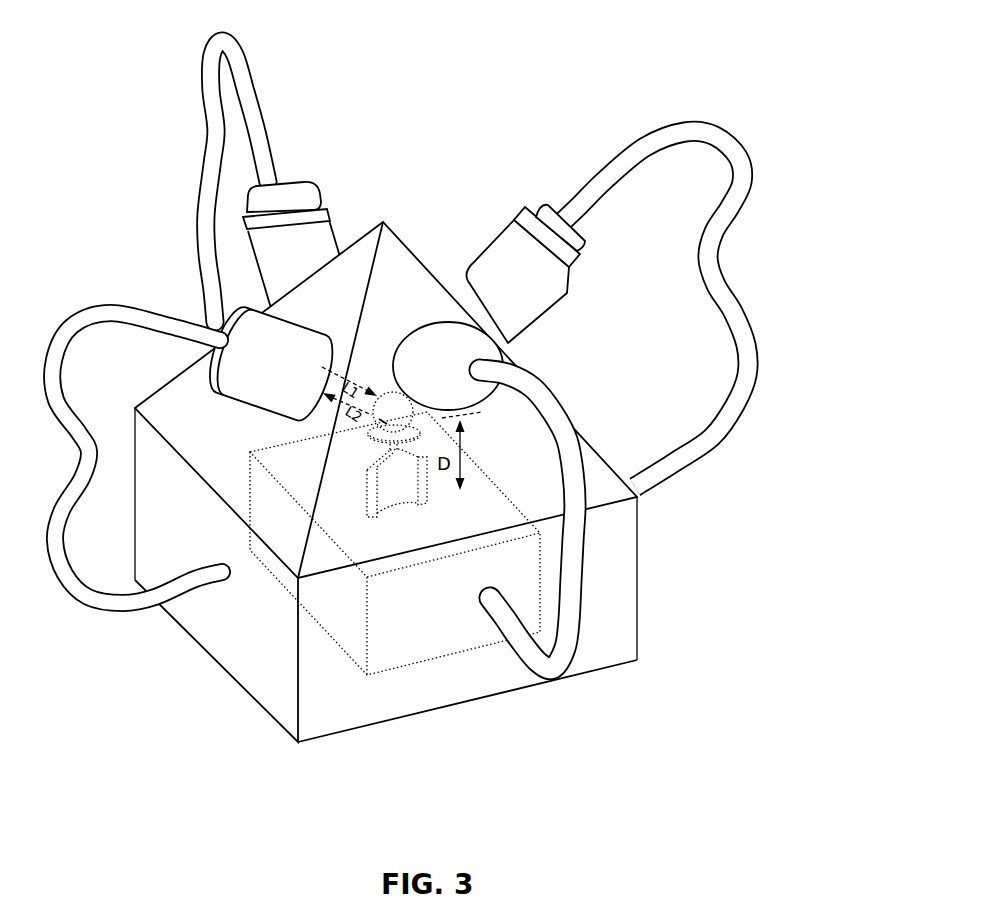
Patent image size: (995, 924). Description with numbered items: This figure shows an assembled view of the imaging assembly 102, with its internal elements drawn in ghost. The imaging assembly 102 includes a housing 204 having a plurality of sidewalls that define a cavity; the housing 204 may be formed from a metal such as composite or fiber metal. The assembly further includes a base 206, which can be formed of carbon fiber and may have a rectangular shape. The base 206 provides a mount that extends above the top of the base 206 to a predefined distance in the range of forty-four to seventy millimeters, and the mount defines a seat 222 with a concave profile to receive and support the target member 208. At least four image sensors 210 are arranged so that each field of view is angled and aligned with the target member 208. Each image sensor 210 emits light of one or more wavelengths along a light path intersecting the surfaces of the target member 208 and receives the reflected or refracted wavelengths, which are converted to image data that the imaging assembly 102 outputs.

The imaging assembly 102 is at (771, 33).
The housing 204 is at (472, 482).
The base 206 is at (296, 601).
The target member 208 is at (336, 414).
The image sensor 210 is at (200, 305).
The seat 222 is at (370, 437).